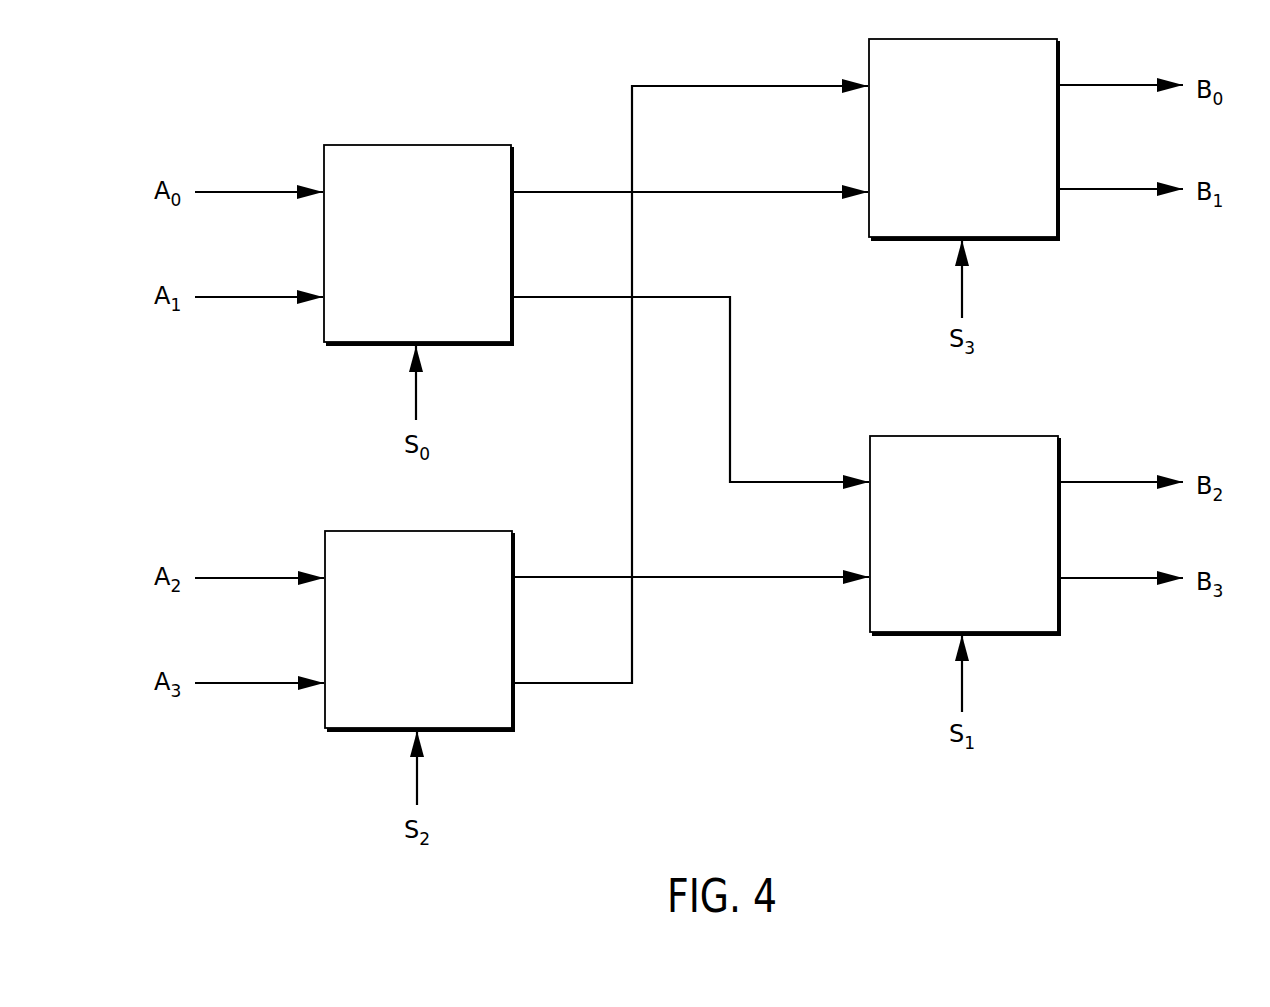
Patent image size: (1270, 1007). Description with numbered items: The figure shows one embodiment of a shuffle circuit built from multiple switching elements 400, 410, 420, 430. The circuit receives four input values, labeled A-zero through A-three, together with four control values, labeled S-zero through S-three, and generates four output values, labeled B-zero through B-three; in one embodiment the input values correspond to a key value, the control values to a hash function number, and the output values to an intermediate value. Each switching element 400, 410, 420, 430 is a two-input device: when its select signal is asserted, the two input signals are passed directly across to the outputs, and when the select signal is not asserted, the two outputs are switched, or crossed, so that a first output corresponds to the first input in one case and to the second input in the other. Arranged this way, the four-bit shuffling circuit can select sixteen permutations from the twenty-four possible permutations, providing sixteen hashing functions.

The switching element 400 is at (488, 321).
The switching element 410 is at (489, 707).
The switching element 420 is at (1034, 214).
The switching element 430 is at (1034, 609).